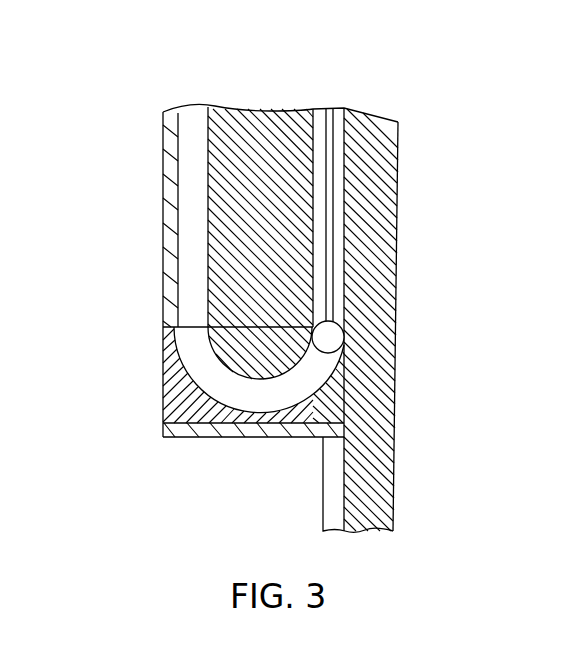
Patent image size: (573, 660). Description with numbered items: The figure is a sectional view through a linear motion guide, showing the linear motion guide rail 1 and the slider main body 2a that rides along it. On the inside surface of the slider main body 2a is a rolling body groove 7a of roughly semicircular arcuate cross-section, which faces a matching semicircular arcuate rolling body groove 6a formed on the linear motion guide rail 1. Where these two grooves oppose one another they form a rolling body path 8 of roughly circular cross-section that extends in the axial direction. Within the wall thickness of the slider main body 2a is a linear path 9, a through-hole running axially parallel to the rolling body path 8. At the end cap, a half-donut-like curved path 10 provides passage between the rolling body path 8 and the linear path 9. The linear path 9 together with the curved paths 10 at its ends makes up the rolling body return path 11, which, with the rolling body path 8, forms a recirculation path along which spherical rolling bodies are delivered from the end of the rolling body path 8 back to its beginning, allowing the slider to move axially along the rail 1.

The linear motion guide rail 1 is at (383, 253).
The slider main body 2a is at (165, 144).
The semicircular arcuate rolling body groove 6a is at (354, 297).
The semicircular arcuate rolling body groove 7a is at (323, 112).
The rolling body path 8 is at (331, 272).
The linear path 9 is at (188, 282).
The curved path 10 is at (188, 337).
The rolling body return path 11 is at (266, 260).